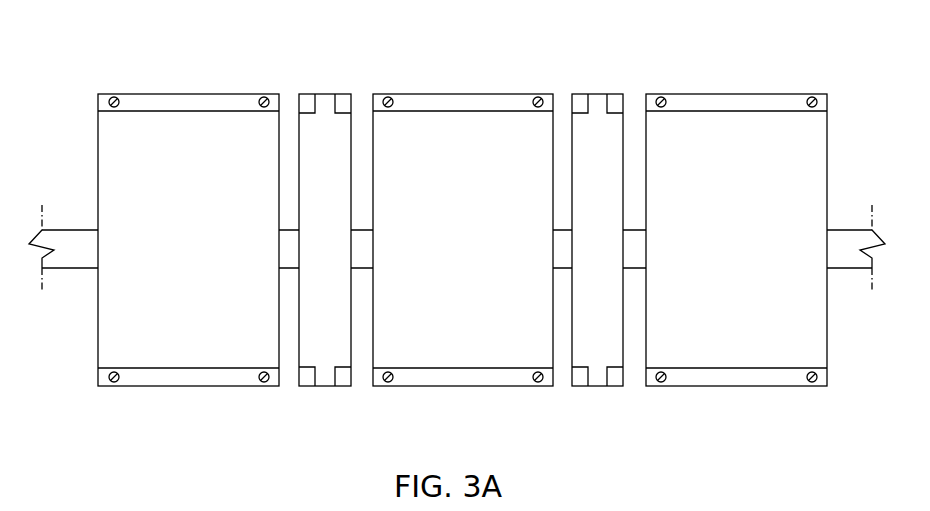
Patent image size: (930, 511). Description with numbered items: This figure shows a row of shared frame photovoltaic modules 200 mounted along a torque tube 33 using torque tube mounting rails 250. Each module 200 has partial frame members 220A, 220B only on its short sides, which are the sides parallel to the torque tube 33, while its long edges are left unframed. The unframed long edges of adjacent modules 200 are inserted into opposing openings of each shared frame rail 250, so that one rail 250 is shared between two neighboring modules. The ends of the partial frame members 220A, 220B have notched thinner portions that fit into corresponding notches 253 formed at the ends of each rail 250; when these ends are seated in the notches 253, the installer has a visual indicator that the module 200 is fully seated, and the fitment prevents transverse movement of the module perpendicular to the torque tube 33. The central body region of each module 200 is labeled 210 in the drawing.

The torque tube 33 is at (77, 228).
The shared frame photovoltaic module 200 is at (196, 91).
The housing body 210 is at (173, 237).
The partial frame member 220A is at (125, 93).
The partial frame member 220B is at (193, 388).
The torque tube mounting rail 250 is at (332, 91).
The notch 253 is at (618, 92).